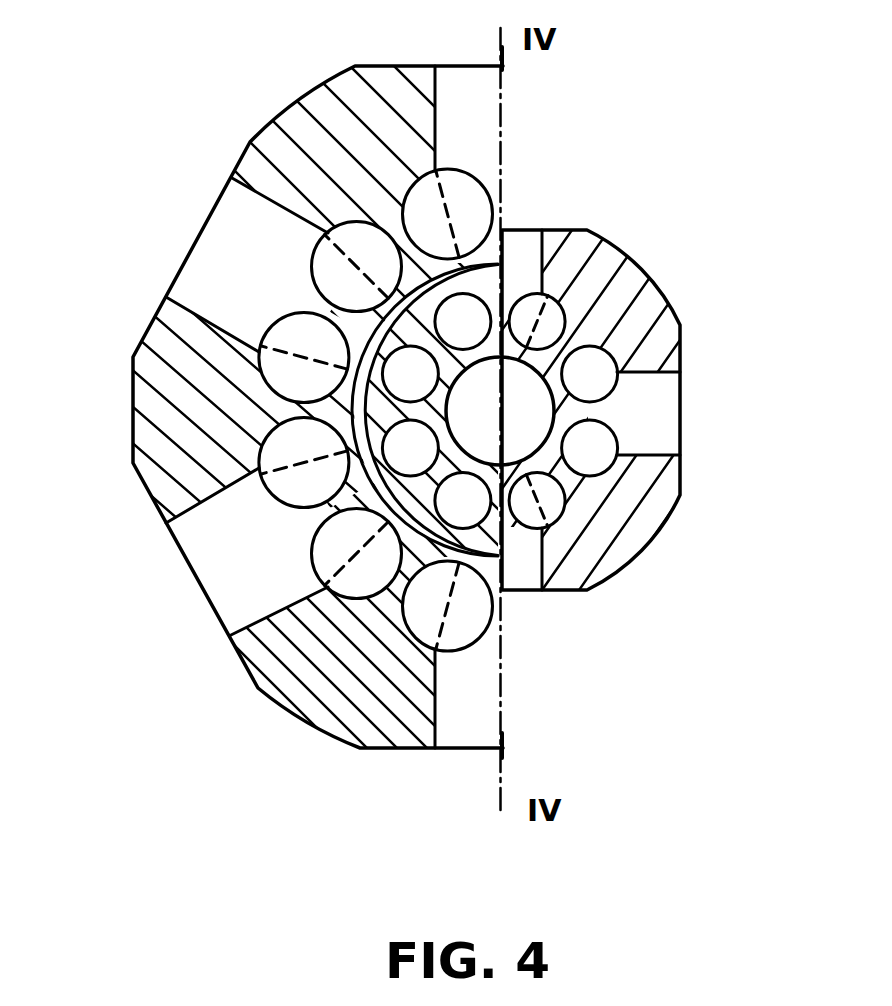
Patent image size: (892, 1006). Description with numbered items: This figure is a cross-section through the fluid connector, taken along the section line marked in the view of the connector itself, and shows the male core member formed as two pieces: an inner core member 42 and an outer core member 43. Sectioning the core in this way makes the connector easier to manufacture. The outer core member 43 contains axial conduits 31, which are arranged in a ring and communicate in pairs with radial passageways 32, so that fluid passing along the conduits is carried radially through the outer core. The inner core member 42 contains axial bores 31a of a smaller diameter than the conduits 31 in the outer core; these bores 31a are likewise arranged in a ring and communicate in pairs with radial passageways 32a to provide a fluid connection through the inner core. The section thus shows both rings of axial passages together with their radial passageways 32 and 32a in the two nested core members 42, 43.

The axial conduits 31 is at (284, 494).
The axial bores 31a is at (608, 437).
The radial passageways 32 is at (215, 263).
The radial passageways 32a is at (680, 413).
The inner core member 42 is at (635, 485).
The outer core member 43 is at (132, 423).